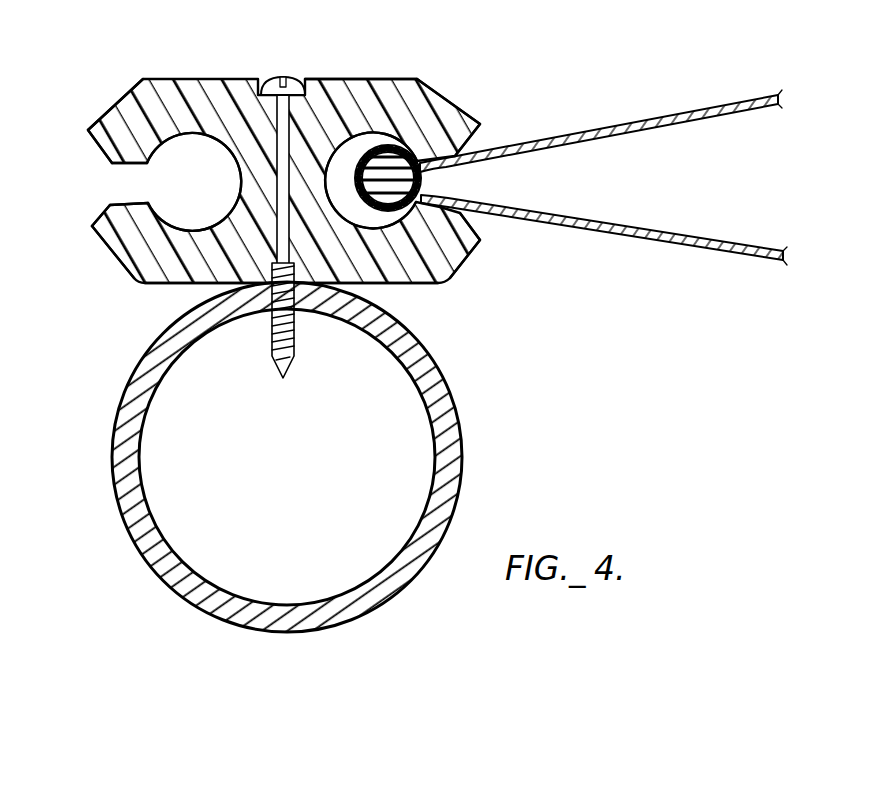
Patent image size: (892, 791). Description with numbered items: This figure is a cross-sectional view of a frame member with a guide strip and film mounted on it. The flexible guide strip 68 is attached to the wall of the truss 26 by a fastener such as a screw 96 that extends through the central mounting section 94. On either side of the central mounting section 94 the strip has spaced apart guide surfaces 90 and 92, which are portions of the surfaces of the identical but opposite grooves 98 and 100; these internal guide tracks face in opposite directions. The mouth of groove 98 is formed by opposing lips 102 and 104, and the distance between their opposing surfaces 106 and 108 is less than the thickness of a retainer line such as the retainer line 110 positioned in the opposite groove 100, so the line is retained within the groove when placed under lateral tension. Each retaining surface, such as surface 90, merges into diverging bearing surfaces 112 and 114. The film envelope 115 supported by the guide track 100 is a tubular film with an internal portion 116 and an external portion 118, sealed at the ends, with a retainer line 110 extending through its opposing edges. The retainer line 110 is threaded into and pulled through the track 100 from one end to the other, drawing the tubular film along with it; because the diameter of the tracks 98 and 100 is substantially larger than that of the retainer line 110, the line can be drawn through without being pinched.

The truss 26 is at (457, 407).
The flexible guide strip 68 is at (210, 73).
The guide surface 90 is at (177, 222).
The guide surface 92 is at (427, 152).
The central mounting section 94 is at (320, 113).
The screw 96 is at (272, 79).
The groove 98 is at (192, 194).
The groove 100 is at (378, 132).
The lip 102 is at (122, 93).
The lip 104 is at (129, 272).
The opposing lip surface 106 is at (127, 165).
The opposing lip surface 108 is at (112, 205).
The retainer line 110 is at (420, 152).
The bearing surface 112 is at (103, 151).
The bearing surface 114 is at (89, 230).
The film envelope 115 is at (678, 188).
The internal portion 116 is at (621, 234).
The external portion 118 is at (625, 124).